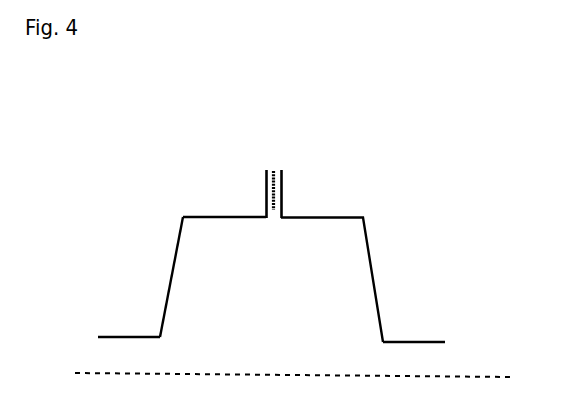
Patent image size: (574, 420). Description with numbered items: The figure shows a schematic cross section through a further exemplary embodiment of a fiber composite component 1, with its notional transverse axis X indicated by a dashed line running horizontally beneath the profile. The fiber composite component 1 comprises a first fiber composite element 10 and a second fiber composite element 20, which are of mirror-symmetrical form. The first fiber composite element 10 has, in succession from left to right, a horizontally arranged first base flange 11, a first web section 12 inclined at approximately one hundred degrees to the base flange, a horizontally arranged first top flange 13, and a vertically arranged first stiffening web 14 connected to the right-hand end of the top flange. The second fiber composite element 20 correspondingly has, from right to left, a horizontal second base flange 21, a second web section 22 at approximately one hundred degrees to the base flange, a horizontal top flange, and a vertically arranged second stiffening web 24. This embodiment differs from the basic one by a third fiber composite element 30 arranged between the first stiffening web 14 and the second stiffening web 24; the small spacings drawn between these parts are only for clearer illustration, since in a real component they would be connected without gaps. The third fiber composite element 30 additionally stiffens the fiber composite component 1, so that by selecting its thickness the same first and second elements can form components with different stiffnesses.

The fiber composite component 1 is at (447, 122).
The first fiber composite element 10 is at (128, 237).
The first base flange 11 is at (128, 335).
The first web section 12 is at (172, 282).
The first top flange 13 is at (228, 216).
The first stiffening web 14 is at (266, 191).
The second fiber composite element 20 is at (425, 255).
The second base flange 21 is at (420, 339).
The second web section 22 is at (358, 222).
The second stiffening web 24 is at (282, 192).
The third fiber composite element 30 is at (272, 171).
The transverse axis X is at (100, 373).